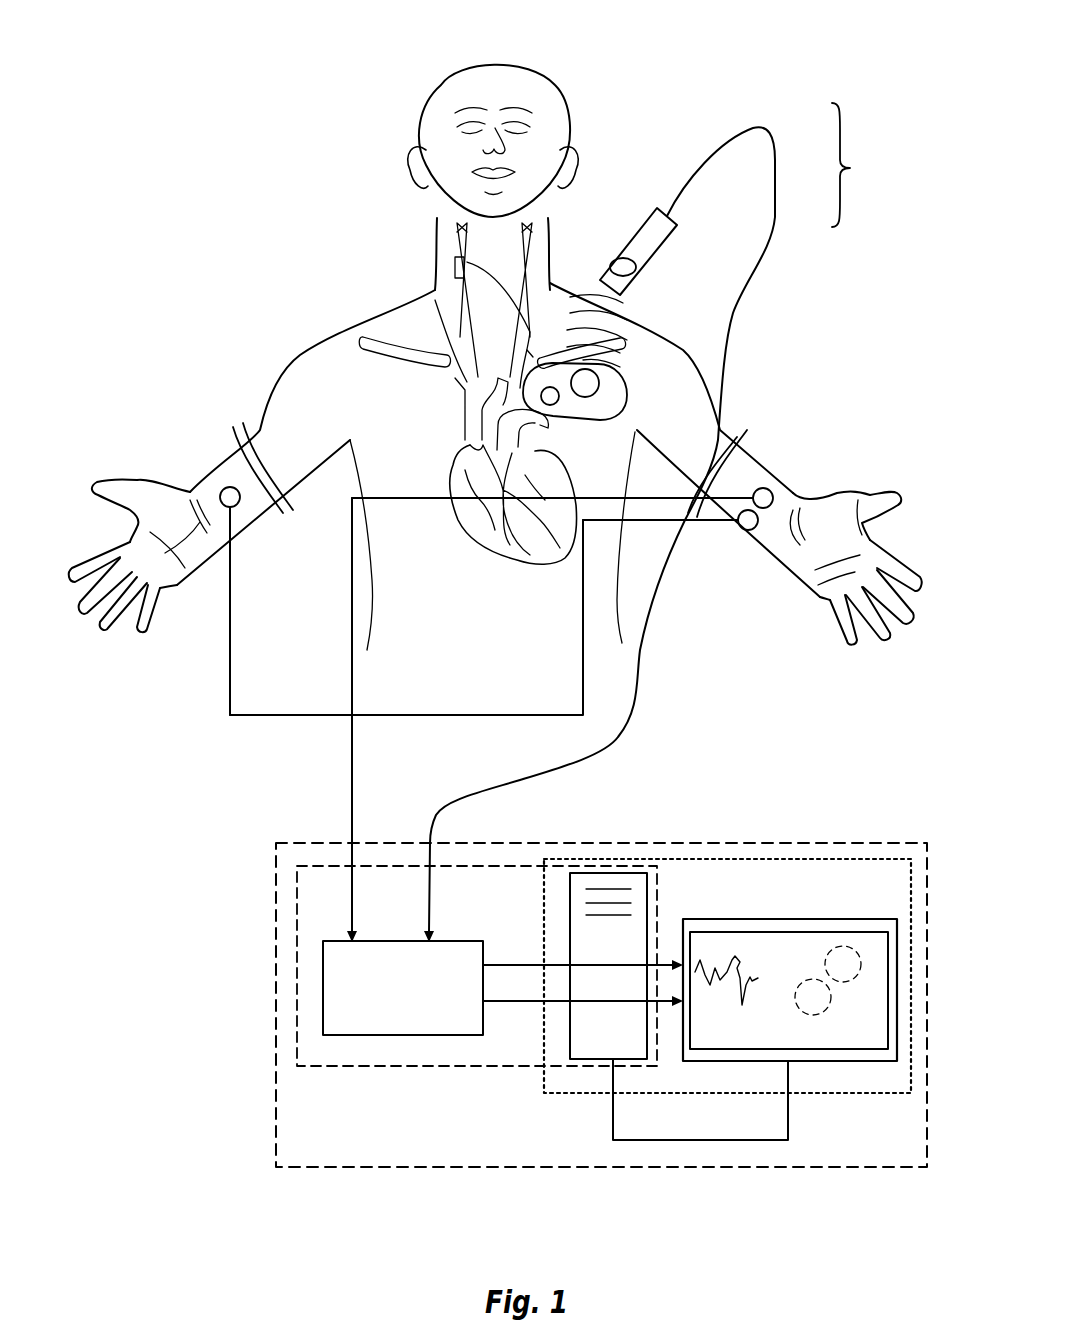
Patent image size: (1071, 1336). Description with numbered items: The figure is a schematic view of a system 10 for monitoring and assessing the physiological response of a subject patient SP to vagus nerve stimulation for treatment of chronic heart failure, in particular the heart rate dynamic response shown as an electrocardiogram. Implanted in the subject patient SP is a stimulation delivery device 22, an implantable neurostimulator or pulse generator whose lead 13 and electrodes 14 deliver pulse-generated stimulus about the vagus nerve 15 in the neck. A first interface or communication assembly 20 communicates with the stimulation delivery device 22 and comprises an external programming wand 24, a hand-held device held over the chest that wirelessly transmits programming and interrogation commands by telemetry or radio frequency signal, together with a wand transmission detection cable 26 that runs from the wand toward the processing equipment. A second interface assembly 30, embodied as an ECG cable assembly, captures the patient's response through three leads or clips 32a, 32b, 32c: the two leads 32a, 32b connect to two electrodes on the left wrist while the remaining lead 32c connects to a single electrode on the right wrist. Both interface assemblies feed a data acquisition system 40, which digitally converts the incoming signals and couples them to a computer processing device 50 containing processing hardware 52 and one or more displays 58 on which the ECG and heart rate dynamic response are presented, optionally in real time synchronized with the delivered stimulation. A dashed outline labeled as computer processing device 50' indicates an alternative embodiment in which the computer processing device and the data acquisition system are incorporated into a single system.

The subject patient SP is at (441, 83).
The system 10 is at (785, 719).
The lead 13 is at (530, 355).
The electrodes 14 is at (455, 268).
The vagus nerve 15 is at (455, 238).
The first interface or communication assembly 20 is at (852, 165).
The stimulation delivery device 22 is at (600, 385).
The external programming wand 24 is at (630, 236).
The wand transmission detection cable 26 is at (777, 213).
The second interface assembly 30 is at (350, 718).
The lead or clip 32a is at (768, 488).
The lead or clip 32b is at (748, 531).
The lead or clip 32c is at (228, 487).
The data acquisition system 40 is at (340, 985).
The computer processing device 50 is at (727, 940).
The computer processing device 50' is at (601, 968).
The processing hardware 52 is at (615, 878).
The display 58 is at (883, 977).